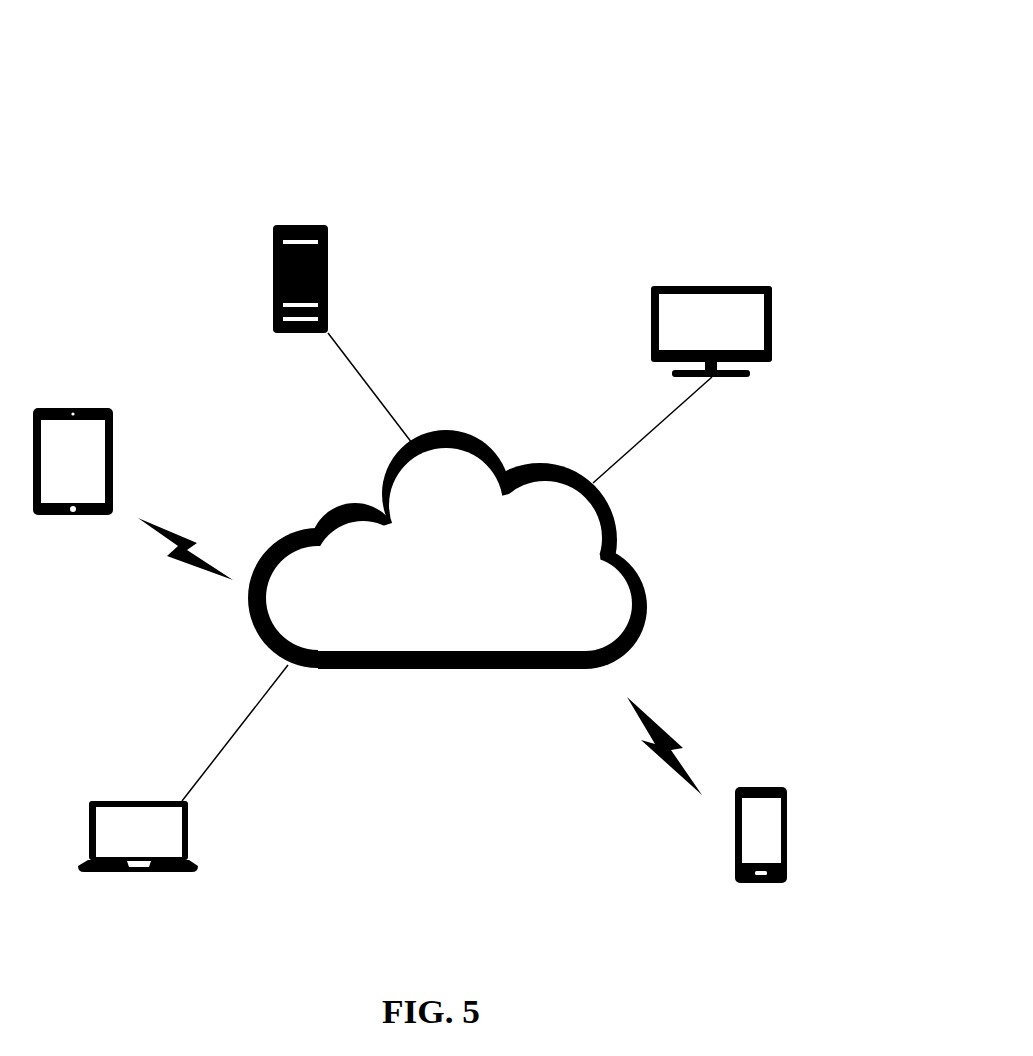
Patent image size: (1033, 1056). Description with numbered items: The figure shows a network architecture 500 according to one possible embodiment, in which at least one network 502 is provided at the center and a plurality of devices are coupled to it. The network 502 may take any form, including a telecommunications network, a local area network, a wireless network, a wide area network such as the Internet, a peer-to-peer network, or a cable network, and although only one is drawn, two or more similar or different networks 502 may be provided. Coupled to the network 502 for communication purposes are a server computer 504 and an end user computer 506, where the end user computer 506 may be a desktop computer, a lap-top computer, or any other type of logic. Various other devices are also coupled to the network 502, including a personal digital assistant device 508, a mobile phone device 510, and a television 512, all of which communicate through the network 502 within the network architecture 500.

The network architecture 500 is at (77, 99).
The network 502 is at (458, 668).
The server computer 504 is at (300, 225).
The end user computer 506 is at (135, 801).
The personal digital assistant (PDA) device 508 is at (75, 408).
The mobile phone device 510 is at (752, 787).
The television 512 is at (716, 286).